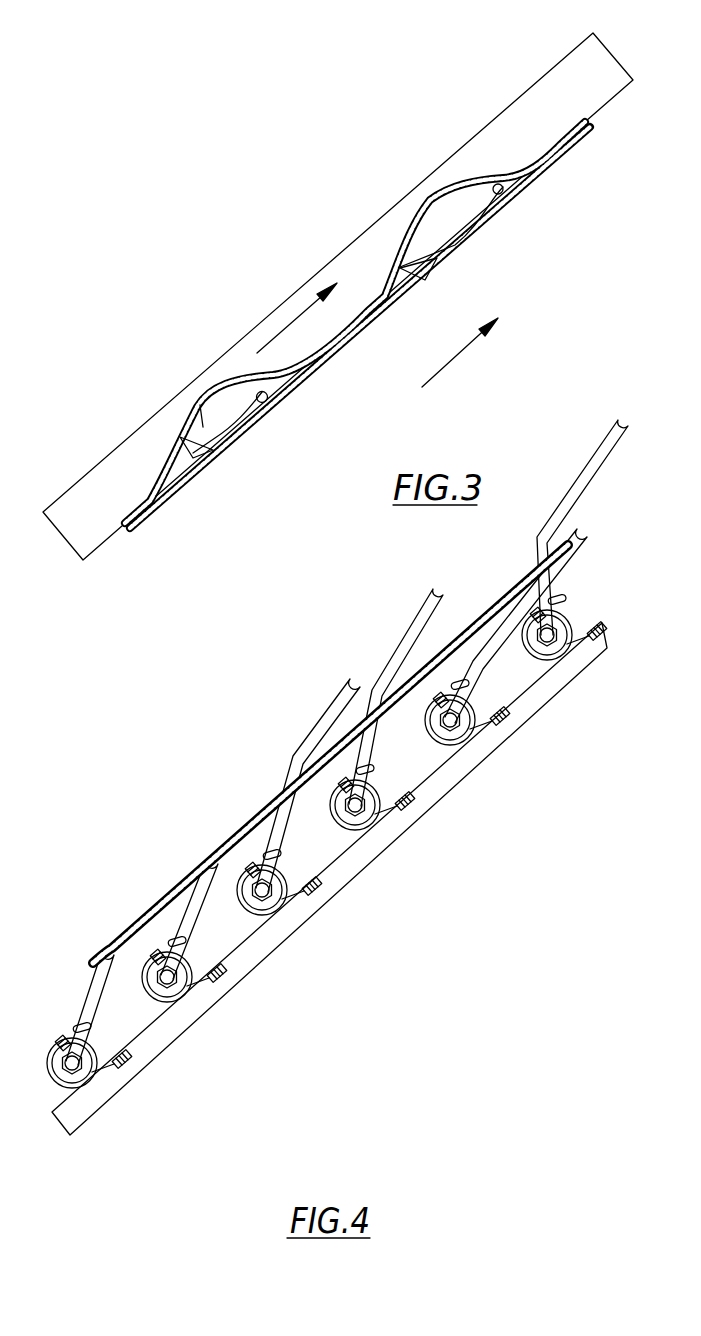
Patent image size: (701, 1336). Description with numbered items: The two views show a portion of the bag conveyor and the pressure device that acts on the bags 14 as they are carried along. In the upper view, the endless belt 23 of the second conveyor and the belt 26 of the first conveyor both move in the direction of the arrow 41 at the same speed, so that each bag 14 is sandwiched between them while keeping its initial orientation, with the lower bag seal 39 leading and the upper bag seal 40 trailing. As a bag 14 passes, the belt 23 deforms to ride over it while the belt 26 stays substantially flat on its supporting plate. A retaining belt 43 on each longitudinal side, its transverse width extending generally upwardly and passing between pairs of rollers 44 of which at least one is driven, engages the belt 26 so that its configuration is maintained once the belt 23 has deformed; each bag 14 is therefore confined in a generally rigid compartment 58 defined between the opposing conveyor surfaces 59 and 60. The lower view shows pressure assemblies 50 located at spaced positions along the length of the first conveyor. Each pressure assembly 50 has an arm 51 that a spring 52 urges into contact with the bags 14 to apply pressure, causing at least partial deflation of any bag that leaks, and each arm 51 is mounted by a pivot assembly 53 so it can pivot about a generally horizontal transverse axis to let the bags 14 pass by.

In FIG. 3, the bag 14 is at (500, 217).
In FIG. 3, the belt 23 is at (203, 400).
In FIG. 3, the belt 26 is at (338, 360).
In FIG. 3, the lower bag seal 39 is at (505, 175).
In FIG. 3, the upper bag seal 40 is at (400, 268).
In FIG. 3, the arrow 41 is at (288, 325).
In FIG. 3, the retaining belt 43 is at (510, 118).
In FIG. 4, the rollers 44 is at (378, 927).
In FIG. 4, the pressure assembly 50 is at (207, 1018).
In FIG. 4, the arm 51 is at (277, 778).
In FIG. 4, the spring 52 is at (293, 907).
In FIG. 4, the pivot assembly 53 is at (165, 1000).
In FIG. 3, the compartment 58 is at (427, 277).
In FIG. 3, the conveyor surface 59 is at (435, 213).
In FIG. 3, the conveyor surface 60 is at (503, 188).